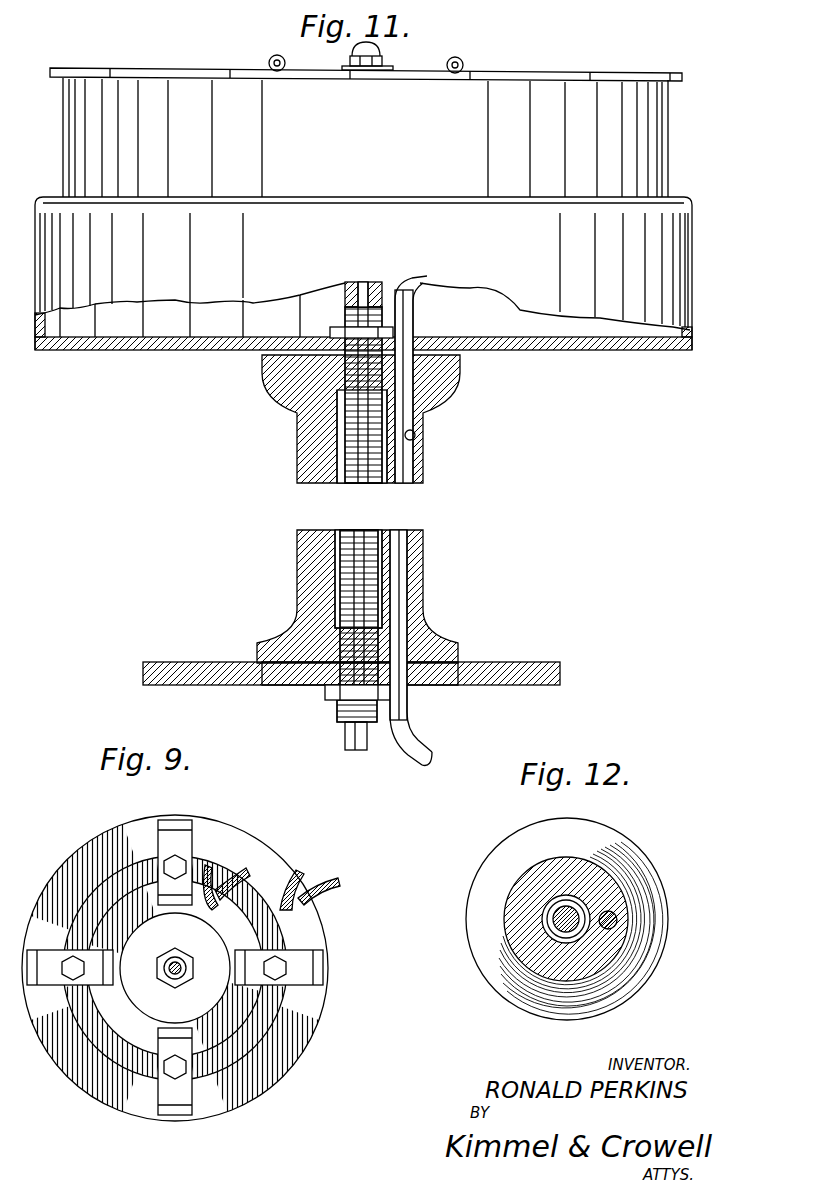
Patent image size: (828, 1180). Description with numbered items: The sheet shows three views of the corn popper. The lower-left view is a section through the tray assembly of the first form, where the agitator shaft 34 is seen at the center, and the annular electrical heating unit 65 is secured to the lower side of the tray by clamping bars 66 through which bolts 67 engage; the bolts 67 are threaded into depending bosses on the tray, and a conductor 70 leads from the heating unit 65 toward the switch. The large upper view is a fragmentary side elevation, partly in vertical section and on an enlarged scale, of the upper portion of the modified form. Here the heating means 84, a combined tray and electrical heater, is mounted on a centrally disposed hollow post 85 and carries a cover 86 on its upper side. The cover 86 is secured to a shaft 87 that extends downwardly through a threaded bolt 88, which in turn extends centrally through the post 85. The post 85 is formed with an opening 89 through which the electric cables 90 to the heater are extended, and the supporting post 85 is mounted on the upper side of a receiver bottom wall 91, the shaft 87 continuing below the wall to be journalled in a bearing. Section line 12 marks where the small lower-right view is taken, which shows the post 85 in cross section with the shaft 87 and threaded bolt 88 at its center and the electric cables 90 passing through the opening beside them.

In FIG. 11, the section line 12— 12 is at (290, 568).
In FIG. 9, the agitator shaft 34 is at (173, 966).
In FIG. 9, the electrical heating unit 65 is at (302, 1040).
In FIG. 9, the clamping bars 66 is at (303, 958).
In FIG. 9, the bolts 67 is at (280, 972).
In FIG. 9, the conductor 70 is at (222, 870).
In FIG. 11, the heating means 84 is at (694, 280).
In FIG. 11, the hollow post 85 is at (312, 446).
In FIG. 12, the hollow post 85 is at (520, 950).
In FIG. 11, the cover 86 is at (670, 150).
In FIG. 11, the shaft 87 is at (357, 290).
In FIG. 12, the shaft 87 is at (563, 922).
In FIG. 11, the threaded bolt 88 is at (347, 317).
In FIG. 12, the threaded bolt 88 is at (580, 934).
In FIG. 11, the opening 89 is at (417, 441).
In FIG. 11, the electric cables 90 is at (404, 475).
In FIG. 12, the electric cables 90 is at (618, 924).
In FIG. 11, the receiver bottom wall 91 is at (514, 668).